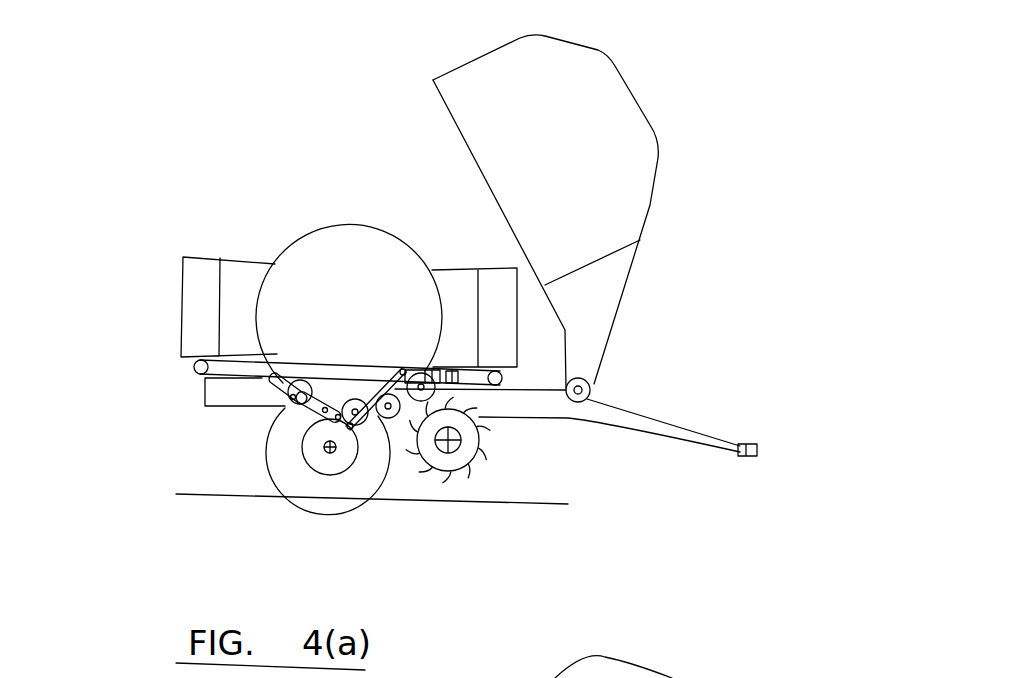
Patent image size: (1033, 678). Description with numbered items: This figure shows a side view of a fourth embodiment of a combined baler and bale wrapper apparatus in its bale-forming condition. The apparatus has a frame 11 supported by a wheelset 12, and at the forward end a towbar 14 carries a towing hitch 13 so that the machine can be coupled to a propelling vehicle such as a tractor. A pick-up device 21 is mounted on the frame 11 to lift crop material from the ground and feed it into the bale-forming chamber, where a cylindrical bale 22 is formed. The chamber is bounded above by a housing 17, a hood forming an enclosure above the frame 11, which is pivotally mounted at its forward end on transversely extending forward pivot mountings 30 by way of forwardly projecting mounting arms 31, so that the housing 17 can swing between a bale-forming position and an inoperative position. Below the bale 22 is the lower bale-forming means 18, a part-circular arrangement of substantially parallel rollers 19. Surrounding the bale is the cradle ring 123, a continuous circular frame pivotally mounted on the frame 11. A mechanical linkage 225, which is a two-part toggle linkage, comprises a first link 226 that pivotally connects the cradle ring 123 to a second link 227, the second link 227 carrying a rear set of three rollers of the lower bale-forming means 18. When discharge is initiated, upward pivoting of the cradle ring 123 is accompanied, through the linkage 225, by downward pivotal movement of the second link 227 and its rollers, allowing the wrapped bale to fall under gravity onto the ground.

The frame 11 is at (580, 417).
The wheelset 12 is at (324, 488).
The towing hitch 13 is at (753, 444).
The towbar 14 is at (672, 437).
The housing 17 is at (612, 137).
The lower bale-forming means 18 is at (297, 423).
The rollers 19 is at (285, 392).
The pick-up device 21 is at (455, 463).
The bale 22 is at (317, 256).
The forward pivot mountings 30 is at (592, 384).
The mounting arms 31 is at (591, 309).
The cradle ring 123 is at (356, 372).
The mechanical linkage 225 is at (343, 431).
The first link 226 is at (378, 420).
The second link 227 is at (283, 406).